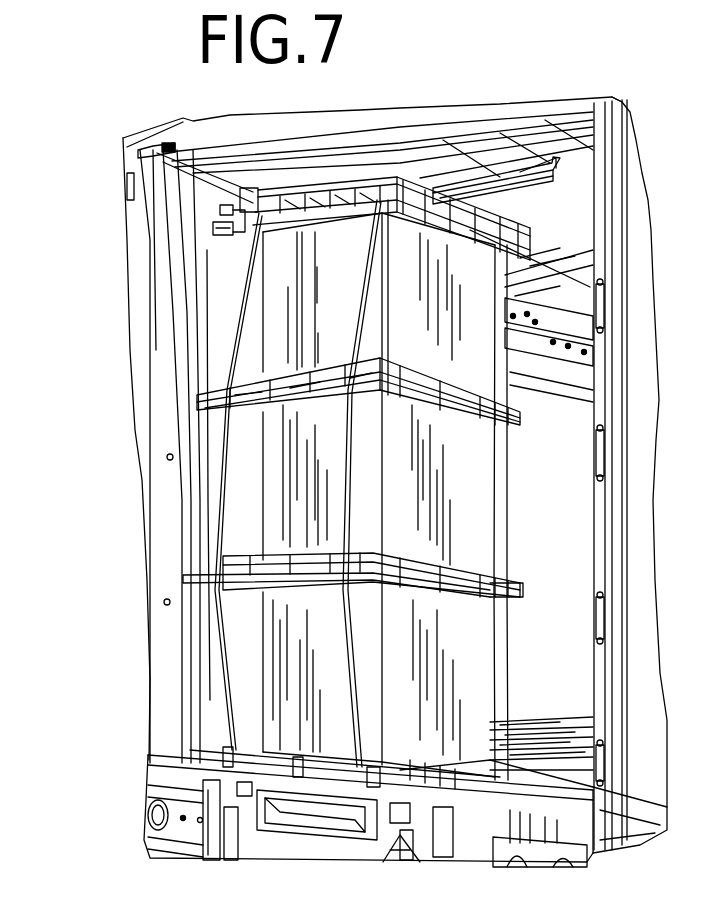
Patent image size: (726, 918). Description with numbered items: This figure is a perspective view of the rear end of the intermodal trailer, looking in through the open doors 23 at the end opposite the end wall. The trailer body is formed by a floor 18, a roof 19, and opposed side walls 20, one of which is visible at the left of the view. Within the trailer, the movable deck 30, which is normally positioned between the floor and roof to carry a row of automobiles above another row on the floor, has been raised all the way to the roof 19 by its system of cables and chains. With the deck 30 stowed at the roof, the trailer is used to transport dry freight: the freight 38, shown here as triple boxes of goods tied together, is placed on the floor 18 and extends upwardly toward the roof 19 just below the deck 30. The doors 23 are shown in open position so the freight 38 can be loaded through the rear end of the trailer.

The roof 19 is at (437, 128).
The movable deck 30 is at (533, 167).
The side wall 20 is at (190, 312).
The freight 38 is at (263, 473).
The doors 23 is at (640, 702).
The floor 18 is at (560, 750).